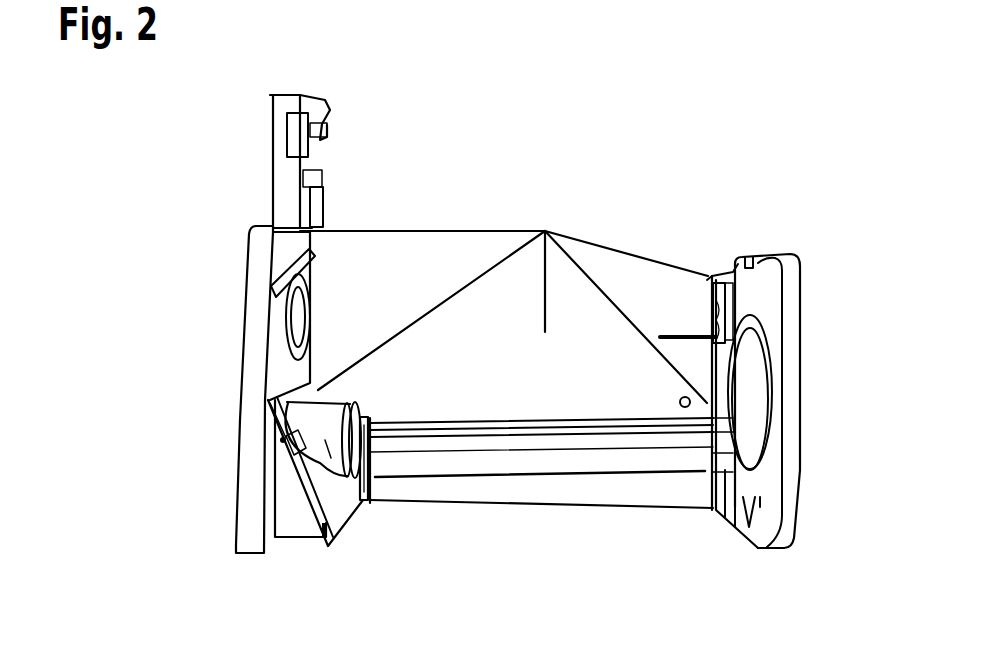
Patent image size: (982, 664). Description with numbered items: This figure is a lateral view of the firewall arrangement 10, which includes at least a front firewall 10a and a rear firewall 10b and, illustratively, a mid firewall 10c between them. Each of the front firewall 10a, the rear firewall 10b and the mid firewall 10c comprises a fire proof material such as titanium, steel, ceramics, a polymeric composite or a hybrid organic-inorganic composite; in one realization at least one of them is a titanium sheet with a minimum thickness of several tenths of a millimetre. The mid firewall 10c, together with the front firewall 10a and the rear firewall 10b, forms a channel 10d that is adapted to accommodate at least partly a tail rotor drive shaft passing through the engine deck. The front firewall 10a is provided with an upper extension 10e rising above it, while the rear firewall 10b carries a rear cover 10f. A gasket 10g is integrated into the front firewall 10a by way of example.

The firewall arrangement 10 is at (577, 207).
The front firewall 10a is at (248, 520).
The rear firewall 10b is at (765, 287).
The mid firewall 10c is at (440, 245).
The channel 10d is at (602, 478).
The upper extension 10e is at (280, 95).
The rear cover 10f is at (768, 523).
The gasket 10g is at (345, 540).